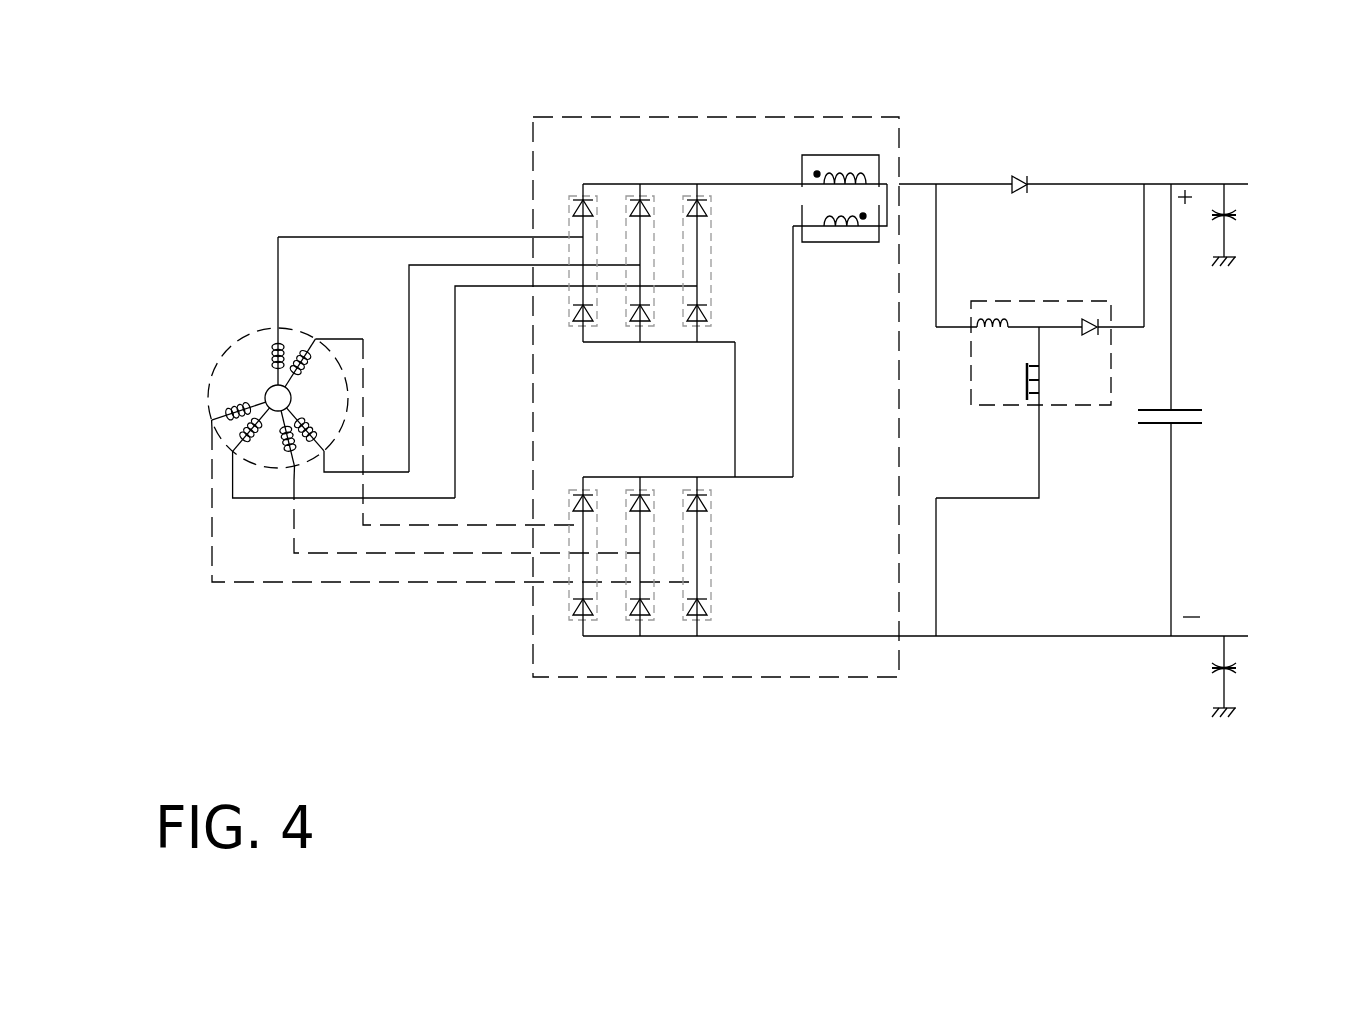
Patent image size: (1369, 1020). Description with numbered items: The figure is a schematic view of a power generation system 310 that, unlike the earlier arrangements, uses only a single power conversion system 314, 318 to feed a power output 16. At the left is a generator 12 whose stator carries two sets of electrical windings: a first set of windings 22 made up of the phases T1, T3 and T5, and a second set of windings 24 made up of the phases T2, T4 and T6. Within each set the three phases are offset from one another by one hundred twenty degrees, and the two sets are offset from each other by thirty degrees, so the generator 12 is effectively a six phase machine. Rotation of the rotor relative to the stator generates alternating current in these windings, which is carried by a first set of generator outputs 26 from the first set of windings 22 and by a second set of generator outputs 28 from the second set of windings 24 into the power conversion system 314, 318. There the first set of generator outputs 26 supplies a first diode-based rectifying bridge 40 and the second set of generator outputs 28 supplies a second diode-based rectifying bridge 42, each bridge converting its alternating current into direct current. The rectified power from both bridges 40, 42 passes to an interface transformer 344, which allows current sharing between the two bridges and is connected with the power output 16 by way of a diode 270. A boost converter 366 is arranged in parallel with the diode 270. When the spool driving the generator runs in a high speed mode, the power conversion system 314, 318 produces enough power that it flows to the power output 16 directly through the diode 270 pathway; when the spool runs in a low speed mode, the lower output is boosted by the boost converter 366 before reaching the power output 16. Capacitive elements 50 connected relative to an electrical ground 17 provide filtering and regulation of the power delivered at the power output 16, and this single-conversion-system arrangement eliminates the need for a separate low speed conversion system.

The power generation system 310 is at (247, 193).
The generator 12 is at (247, 333).
The first set of windings 22 is at (212, 358).
The second set of windings 24 is at (200, 392).
The first set of generator outputs 26 is at (505, 286).
The second set of generator outputs 28 is at (425, 525).
The first diode-based rectifying bridge 40 is at (720, 282).
The second diode-based rectifying bridge 42 is at (740, 550).
The power conversion system 318 is at (905, 126).
The interface transformer 344 is at (833, 250).
The power conversion system 314 is at (912, 465).
The diode 270 is at (1030, 160).
The boost converter 366 is at (1040, 286).
The power output 16 is at (1230, 172).
The capacitive elements 50 is at (1250, 212).
The electrical ground 17 is at (1255, 262).
The winding phase T1 is at (267, 282).
The winding phase T2 is at (339, 323).
The winding phase T3 is at (366, 455).
The winding phase T4 is at (305, 481).
The winding phase T5 is at (343, 474).
The winding phase T6 is at (197, 423).